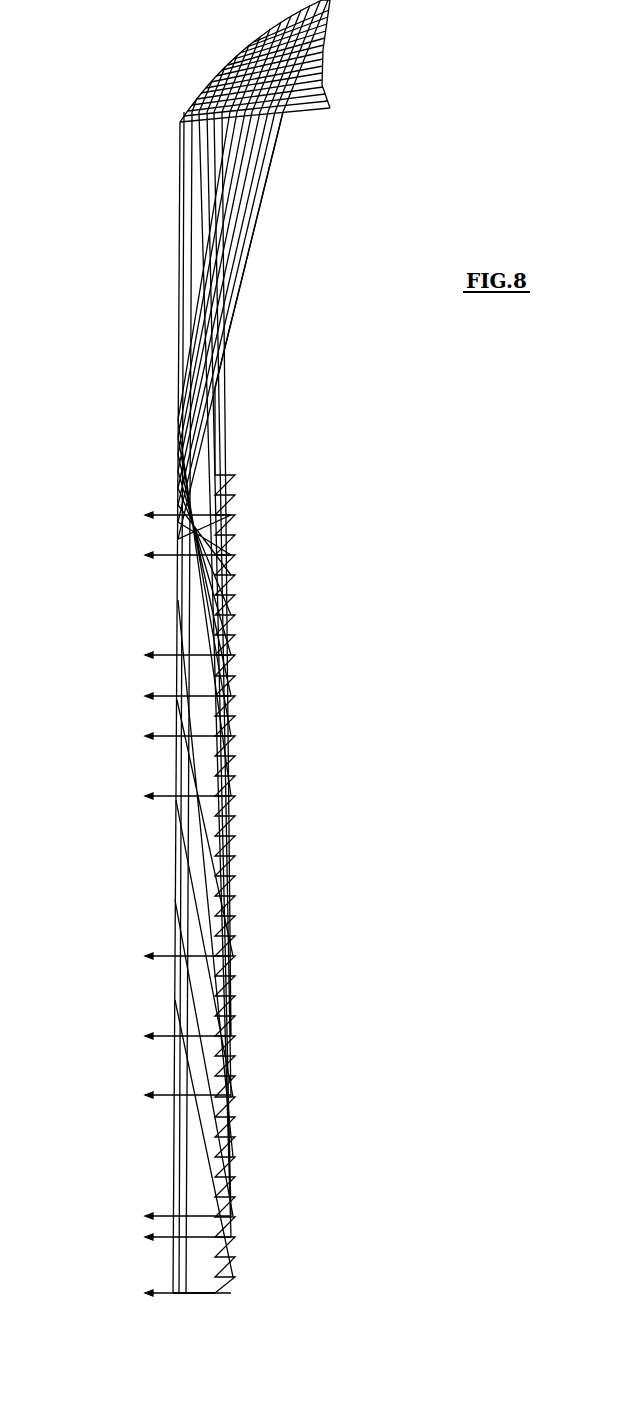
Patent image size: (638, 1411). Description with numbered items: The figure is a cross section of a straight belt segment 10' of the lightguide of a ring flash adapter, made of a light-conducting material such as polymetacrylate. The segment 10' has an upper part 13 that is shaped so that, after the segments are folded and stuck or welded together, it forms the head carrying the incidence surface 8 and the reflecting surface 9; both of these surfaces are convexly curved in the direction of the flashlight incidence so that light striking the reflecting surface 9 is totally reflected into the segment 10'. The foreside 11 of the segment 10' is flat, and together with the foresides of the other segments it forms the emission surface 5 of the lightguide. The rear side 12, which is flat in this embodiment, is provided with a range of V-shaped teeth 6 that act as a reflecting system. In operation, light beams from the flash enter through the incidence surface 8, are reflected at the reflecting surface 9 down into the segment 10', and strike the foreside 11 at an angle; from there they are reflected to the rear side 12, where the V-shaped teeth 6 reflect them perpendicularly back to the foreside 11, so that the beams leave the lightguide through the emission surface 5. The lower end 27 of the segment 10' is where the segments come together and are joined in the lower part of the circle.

The emission surface 5 is at (175, 688).
The "V" shaped teeth 6 is at (232, 636).
The incidence surface 8 is at (322, 72).
The reflecting surface 9 is at (217, 83).
The belt segment 10' is at (311, 702).
The foreside 11 is at (171, 1061).
The rear side 12 is at (240, 828).
The upper part 13 is at (258, 210).
The lower end 27 is at (214, 1296).